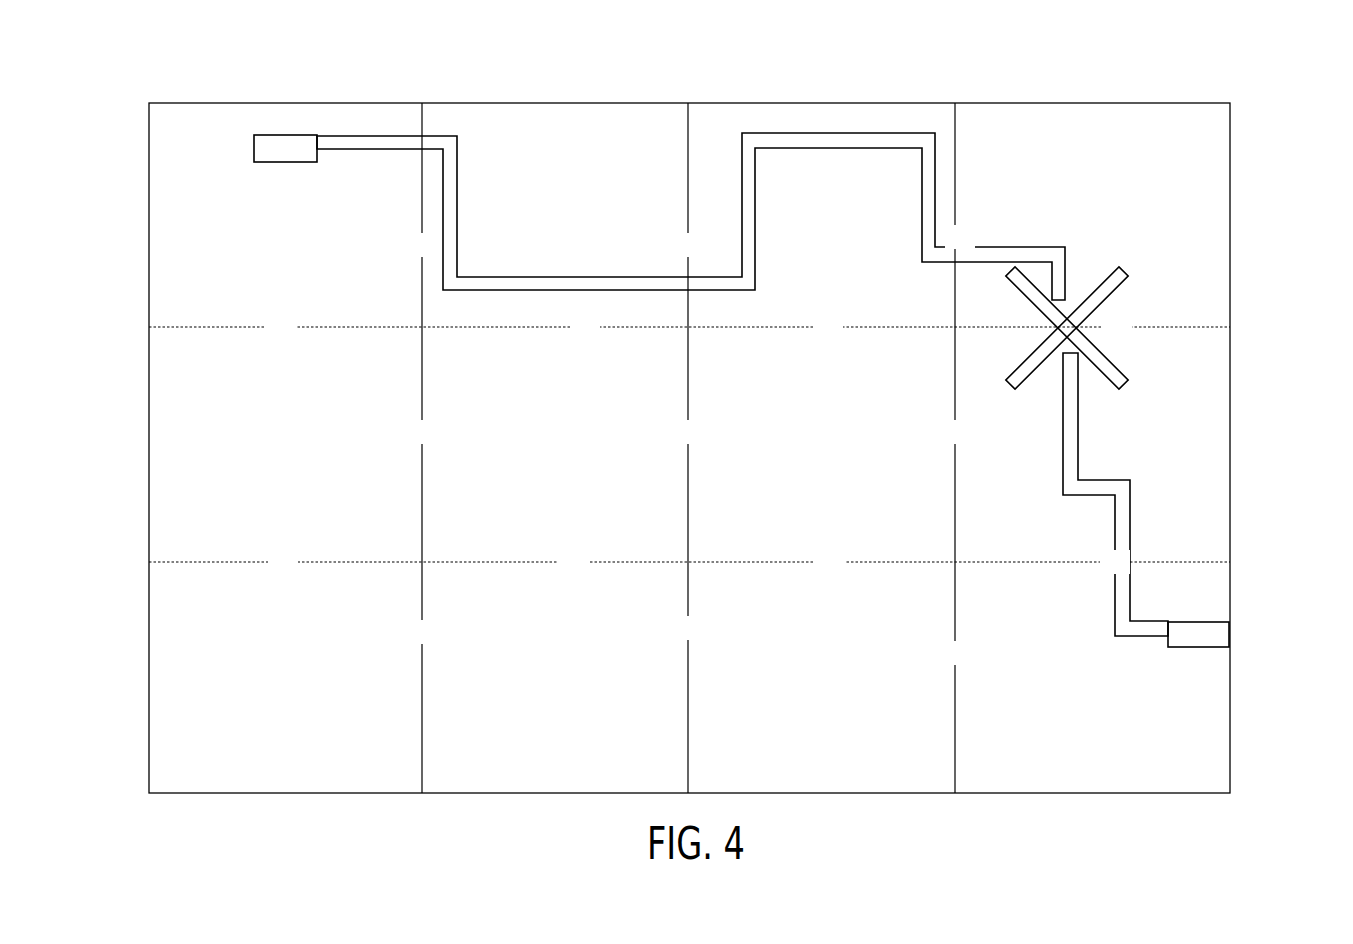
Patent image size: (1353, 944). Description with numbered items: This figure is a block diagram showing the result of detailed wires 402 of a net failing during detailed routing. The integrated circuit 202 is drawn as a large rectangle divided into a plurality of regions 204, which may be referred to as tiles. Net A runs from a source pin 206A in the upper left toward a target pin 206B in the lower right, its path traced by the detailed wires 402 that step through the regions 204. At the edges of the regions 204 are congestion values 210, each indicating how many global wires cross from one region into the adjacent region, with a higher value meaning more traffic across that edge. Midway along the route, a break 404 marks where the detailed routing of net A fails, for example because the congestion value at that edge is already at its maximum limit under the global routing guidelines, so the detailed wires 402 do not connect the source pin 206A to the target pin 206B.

The integrated circuit 202 is at (1229, 142).
The regions 204 is at (168, 618).
The source pin 206A is at (288, 134).
The target pin 206B is at (1193, 648).
The congestion values 210 is at (940, 670).
The detailed wires 402 is at (1172, 500).
The break 404 is at (1172, 277).